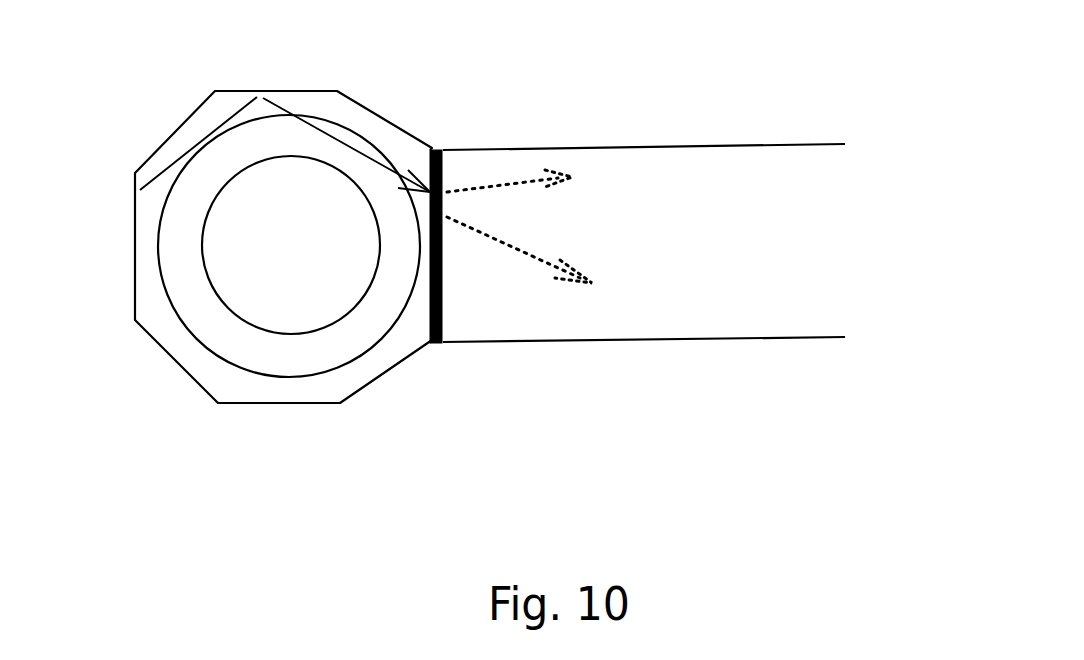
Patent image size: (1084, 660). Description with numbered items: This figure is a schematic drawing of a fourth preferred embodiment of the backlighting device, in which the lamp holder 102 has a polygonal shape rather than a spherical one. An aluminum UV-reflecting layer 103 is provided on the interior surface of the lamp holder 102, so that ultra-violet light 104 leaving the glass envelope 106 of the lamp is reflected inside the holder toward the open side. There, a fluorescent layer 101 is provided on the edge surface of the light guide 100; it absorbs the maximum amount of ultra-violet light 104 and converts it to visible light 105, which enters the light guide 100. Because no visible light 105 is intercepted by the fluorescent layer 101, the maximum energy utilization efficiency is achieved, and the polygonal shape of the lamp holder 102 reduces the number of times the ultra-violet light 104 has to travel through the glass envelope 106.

The light guide 100 is at (728, 259).
The fluorescent layer 101 is at (437, 148).
The lamp holder 102 is at (312, 403).
The aluminum UV-reflecting layer 103 is at (158, 314).
The ultra-violet light 104 is at (138, 197).
The visible light 105 is at (542, 222).
The glass envelope 106 is at (287, 137).